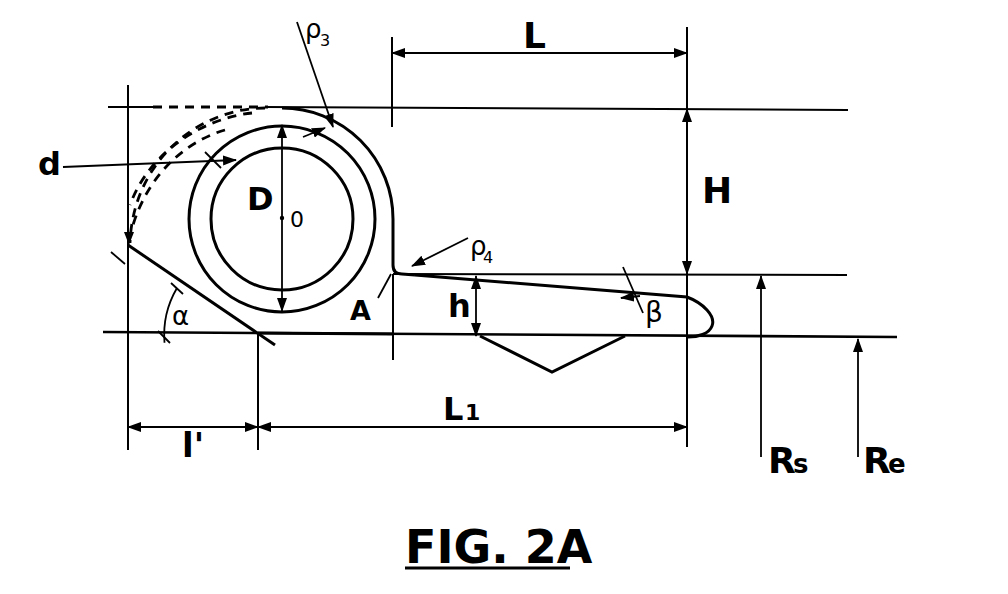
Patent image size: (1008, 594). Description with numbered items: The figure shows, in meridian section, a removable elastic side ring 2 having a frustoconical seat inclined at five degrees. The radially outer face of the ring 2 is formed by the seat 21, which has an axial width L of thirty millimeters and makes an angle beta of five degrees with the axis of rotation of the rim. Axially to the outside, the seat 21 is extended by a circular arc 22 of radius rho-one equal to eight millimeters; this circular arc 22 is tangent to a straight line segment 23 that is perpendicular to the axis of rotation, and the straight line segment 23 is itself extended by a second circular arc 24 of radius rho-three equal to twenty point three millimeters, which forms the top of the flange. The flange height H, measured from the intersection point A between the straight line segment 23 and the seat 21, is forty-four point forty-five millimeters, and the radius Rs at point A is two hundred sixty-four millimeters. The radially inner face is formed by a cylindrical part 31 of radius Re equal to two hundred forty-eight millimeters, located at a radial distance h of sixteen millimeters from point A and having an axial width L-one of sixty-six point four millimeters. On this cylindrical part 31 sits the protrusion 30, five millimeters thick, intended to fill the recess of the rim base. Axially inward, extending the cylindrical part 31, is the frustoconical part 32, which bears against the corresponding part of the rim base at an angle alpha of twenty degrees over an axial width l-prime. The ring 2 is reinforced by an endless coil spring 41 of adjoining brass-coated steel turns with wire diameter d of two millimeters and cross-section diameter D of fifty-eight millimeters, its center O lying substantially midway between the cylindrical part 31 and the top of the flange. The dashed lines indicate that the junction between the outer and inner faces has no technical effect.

The removable ring 2 is at (157, 227).
The seat 21 is at (560, 286).
The circular arc 22 is at (405, 269).
The straight line segment 23 is at (394, 234).
The second circular arc 24 is at (358, 133).
The protrusion 30 is at (565, 348).
The cylindrical part 31 is at (333, 335).
The frustoconical part 32 is at (217, 313).
The endless coil spring 41 is at (213, 162).